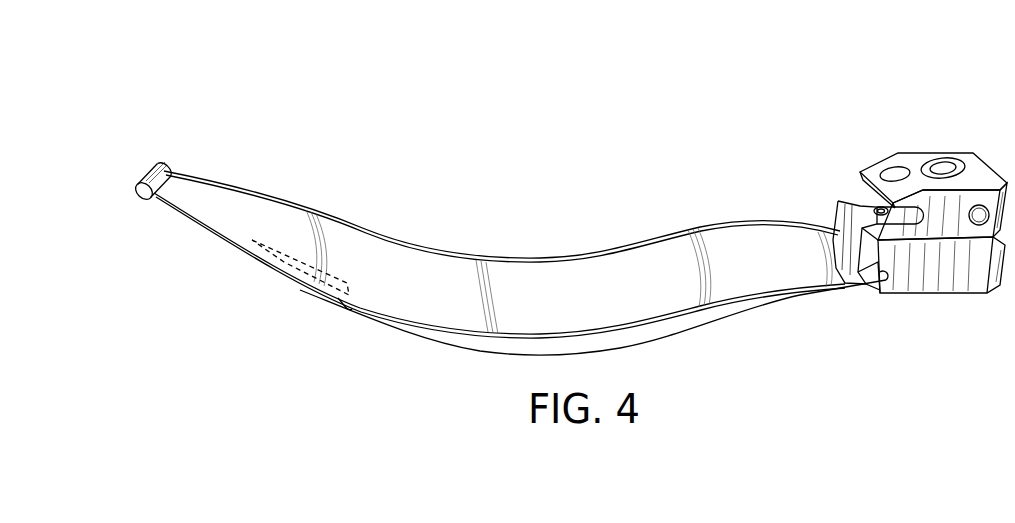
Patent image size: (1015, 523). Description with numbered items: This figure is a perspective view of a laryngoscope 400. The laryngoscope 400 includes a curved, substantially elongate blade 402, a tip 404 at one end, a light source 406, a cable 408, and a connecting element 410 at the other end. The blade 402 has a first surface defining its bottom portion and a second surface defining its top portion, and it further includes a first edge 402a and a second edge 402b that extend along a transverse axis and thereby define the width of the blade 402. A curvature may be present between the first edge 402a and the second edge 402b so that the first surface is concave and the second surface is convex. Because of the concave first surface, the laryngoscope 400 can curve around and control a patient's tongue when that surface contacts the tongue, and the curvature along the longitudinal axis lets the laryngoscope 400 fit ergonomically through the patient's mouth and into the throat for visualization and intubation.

The laryngoscope 400 is at (478, 101).
The blade 402 is at (256, 190).
The first edge 402a is at (540, 258).
The second edge 402b is at (533, 328).
The tip 404 is at (144, 197).
The light source 406 is at (328, 303).
The cable 408 is at (493, 352).
The connecting element 410 is at (842, 199).